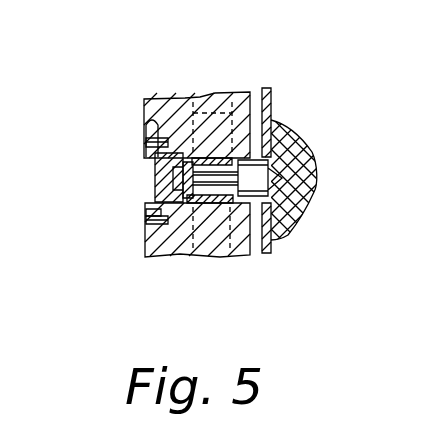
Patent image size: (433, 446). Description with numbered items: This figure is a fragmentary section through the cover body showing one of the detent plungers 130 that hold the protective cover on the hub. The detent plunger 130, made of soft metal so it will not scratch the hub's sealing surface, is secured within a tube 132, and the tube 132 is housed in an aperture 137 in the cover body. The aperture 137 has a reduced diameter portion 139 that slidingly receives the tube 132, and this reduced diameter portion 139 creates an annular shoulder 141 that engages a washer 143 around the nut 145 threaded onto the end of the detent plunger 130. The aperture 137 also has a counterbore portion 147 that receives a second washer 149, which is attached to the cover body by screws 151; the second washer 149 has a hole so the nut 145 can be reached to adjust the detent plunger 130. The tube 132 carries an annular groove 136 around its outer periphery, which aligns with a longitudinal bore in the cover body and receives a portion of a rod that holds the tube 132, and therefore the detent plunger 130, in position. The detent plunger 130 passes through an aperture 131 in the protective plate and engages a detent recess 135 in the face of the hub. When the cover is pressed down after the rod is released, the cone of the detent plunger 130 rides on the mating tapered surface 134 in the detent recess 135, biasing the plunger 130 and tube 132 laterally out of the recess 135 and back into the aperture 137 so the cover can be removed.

The detent plunger 130 is at (300, 140).
The aperture 131 is at (268, 133).
The tube 132 is at (232, 203).
The tapered surface 134 is at (313, 183).
The detent recess 135 is at (313, 158).
The annular groove 136 is at (193, 203).
The aperture 137 is at (145, 170).
The reduced diameter portion 139 is at (238, 100).
The annular shoulder 141 is at (195, 157).
The washer 143 is at (145, 192).
The nut 145 is at (145, 187).
The counterbore portion 147 is at (142, 123).
The second washer 149 is at (145, 157).
The screws 151 is at (143, 218).